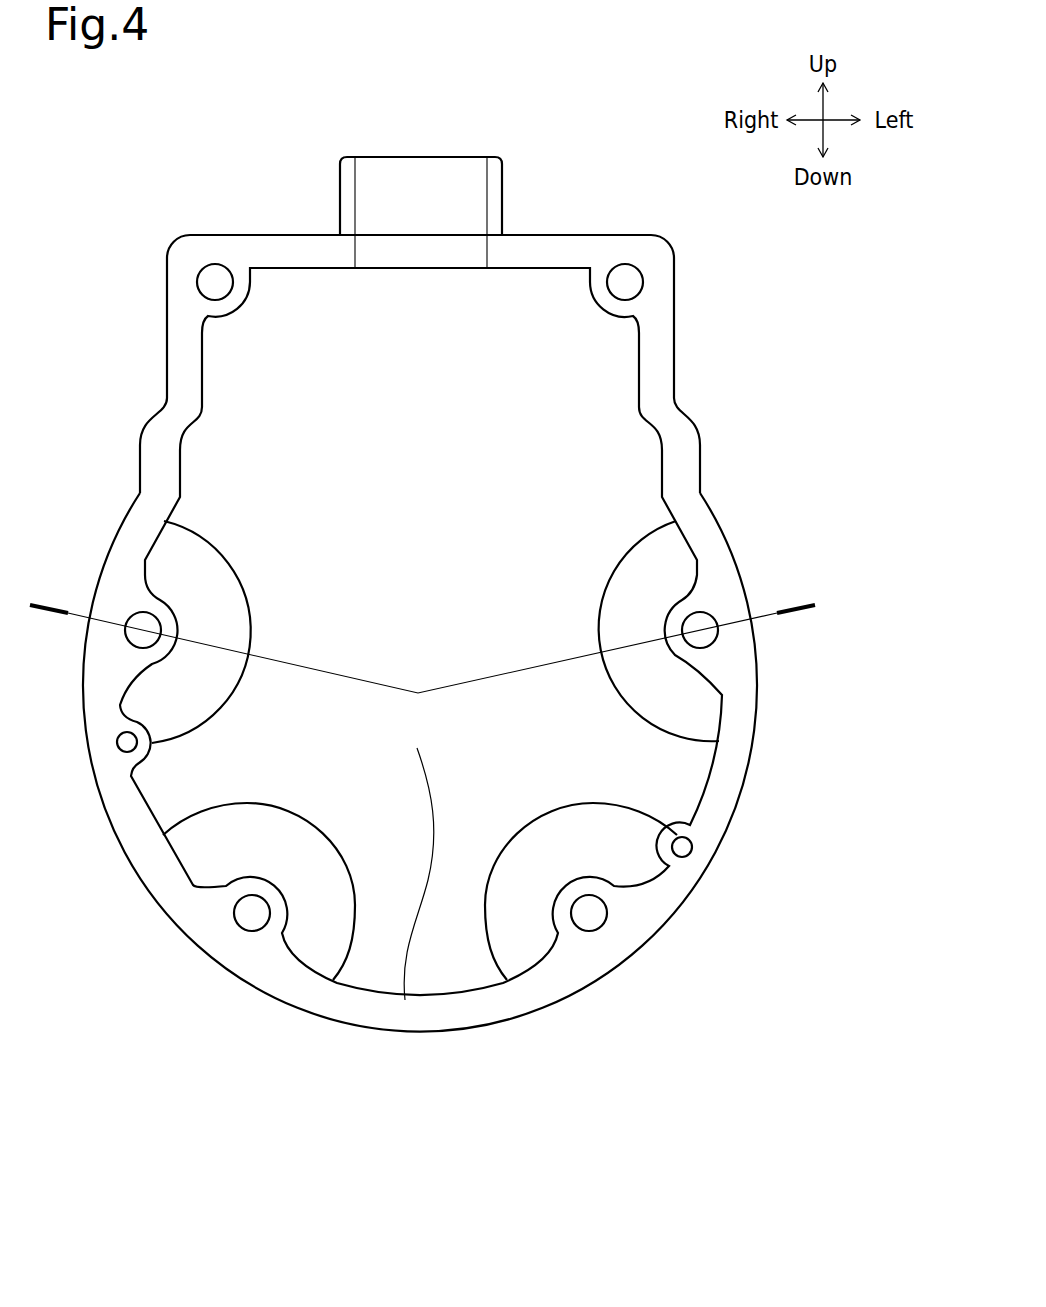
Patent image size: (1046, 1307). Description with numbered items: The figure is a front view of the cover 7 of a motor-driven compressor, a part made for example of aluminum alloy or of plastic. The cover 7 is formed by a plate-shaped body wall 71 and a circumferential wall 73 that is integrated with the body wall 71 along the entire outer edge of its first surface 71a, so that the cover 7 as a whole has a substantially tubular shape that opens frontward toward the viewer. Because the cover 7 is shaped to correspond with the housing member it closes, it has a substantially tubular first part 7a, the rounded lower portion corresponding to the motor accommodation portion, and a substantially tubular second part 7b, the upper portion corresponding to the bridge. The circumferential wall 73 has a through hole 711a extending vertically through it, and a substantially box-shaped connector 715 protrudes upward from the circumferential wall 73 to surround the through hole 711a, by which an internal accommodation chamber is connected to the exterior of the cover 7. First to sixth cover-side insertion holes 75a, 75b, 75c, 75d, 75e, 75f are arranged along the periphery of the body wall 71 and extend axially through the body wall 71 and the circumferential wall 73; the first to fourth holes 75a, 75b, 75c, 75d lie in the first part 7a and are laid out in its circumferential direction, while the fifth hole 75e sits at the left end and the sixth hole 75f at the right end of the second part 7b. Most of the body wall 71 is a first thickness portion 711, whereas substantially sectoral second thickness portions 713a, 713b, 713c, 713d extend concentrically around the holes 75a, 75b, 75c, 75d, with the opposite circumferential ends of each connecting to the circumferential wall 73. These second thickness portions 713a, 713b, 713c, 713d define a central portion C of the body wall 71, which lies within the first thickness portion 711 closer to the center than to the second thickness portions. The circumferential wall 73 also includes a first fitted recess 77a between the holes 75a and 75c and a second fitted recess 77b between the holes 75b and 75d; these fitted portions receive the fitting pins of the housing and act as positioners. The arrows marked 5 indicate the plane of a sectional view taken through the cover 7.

The cover 7 is at (443, 590).
The first part 7a is at (762, 767).
The second part 7b is at (164, 388).
The body wall 71 is at (566, 368).
The first surface 71a is at (450, 400).
The circumferential wall 73 is at (271, 250).
The first cover-side insertion hole 75a is at (702, 626).
The second cover-side insertion hole 75b is at (140, 626).
The third cover-side insertion hole 75c is at (592, 918).
The fourth cover-side insertion hole 75d is at (248, 918).
The fifth cover-side insertion hole 75e is at (630, 280).
The sixth cover-side insertion hole 75f is at (213, 280).
The first fitted recess 77a is at (684, 848).
The second fitted recess 77b is at (126, 742).
The first thickness portion 711 is at (405, 1000).
The through hole 711a is at (375, 247).
The second thickness portion 713a is at (628, 703).
The second thickness portion 713b is at (215, 706).
The second thickness portion 713c is at (568, 810).
The second thickness portion 713d is at (272, 810).
The connector 715 is at (495, 167).
The section line V-V 5 is at (797, 610).
The central portion C is at (414, 581).